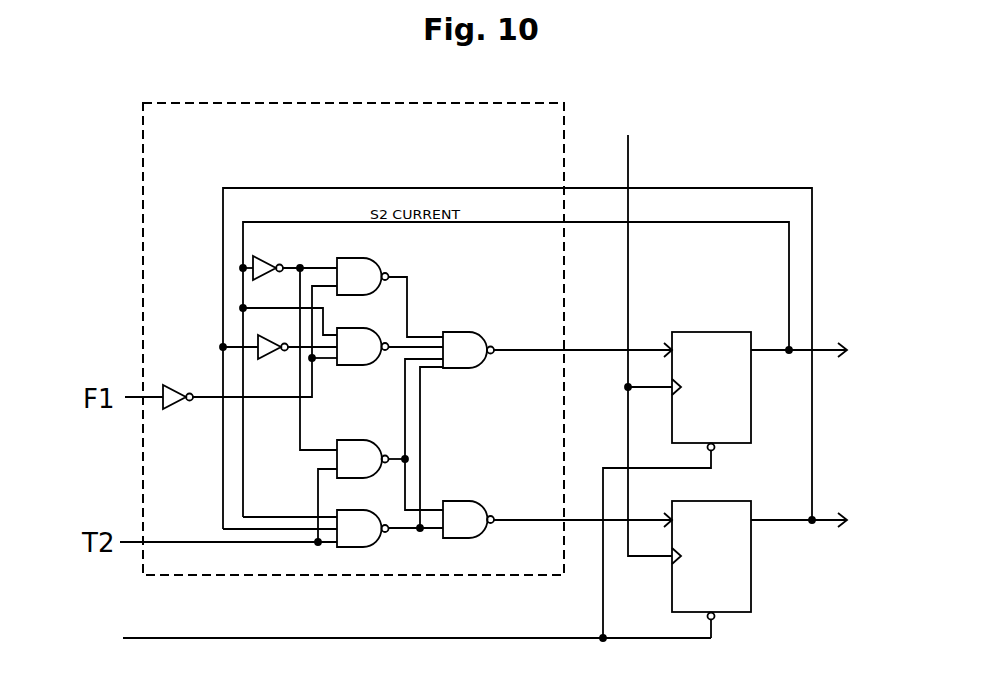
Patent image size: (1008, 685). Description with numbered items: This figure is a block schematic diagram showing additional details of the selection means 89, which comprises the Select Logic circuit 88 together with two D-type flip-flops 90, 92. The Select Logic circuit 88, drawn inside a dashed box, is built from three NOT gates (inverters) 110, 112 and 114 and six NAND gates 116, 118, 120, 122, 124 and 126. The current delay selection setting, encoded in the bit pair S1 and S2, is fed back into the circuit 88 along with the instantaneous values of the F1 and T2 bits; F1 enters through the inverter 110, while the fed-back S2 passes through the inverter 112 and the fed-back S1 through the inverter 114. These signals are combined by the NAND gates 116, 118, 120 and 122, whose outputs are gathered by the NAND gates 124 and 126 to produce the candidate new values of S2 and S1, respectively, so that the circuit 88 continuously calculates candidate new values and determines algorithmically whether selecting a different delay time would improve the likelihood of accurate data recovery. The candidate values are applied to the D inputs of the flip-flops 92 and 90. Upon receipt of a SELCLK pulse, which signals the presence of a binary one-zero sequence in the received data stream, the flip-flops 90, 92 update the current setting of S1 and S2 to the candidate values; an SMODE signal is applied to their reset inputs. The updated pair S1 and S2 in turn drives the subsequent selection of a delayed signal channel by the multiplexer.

The Select Logic circuit 88 is at (128, 182).
The selection means 89 is at (742, 148).
The flip-flop 90 is at (723, 500).
The flip-flop 92 is at (713, 332).
The NOT gate 110 is at (176, 405).
The NOT gate 112 is at (265, 265).
The NOT gate 114 is at (270, 357).
The NAND gate 116 is at (376, 264).
The NAND gate 118 is at (370, 365).
The NAND gate 120 is at (378, 443).
The NAND gate 122 is at (370, 547).
The NAND gate 124 is at (470, 364).
The NAND gate 126 is at (460, 500).